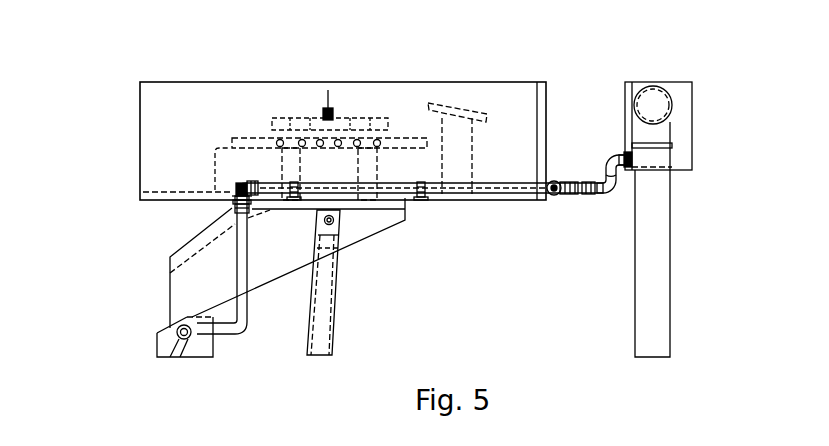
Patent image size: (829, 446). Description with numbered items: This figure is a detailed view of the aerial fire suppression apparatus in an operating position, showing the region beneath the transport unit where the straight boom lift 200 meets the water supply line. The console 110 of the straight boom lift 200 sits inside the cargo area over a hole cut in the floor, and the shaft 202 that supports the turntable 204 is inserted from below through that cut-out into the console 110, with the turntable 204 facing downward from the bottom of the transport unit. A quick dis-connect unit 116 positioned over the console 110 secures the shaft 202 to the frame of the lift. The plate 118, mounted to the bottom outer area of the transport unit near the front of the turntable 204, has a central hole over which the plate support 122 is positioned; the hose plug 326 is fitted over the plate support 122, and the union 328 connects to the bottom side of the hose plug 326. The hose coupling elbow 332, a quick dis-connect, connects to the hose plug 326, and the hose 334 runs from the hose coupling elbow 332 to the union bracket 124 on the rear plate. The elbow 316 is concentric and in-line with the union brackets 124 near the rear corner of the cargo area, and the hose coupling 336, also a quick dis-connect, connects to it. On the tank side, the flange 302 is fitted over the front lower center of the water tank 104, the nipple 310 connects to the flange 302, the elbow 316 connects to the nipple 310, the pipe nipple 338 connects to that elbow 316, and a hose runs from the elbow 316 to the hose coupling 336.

The water tank 104 is at (682, 98).
The console 110 is at (220, 163).
The quick dis-connect unit 116 is at (402, 140).
The plate 118 is at (237, 204).
The plate support 122 is at (232, 199).
The union bracket 124 is at (294, 197).
The straight boom lift 200 is at (187, 315).
The shaft 202 is at (312, 160).
The turntable 204 is at (195, 280).
The flange 302 is at (622, 168).
The nipple 310 is at (633, 157).
The elbow 316 is at (554, 181).
The hose plug 326 is at (233, 197).
The union 328 is at (237, 209).
The hose coupling elbow 332 is at (247, 186).
The hose 334 is at (266, 188).
The hose coupling 336 is at (575, 184).
The pipe nipple 338 is at (615, 175).